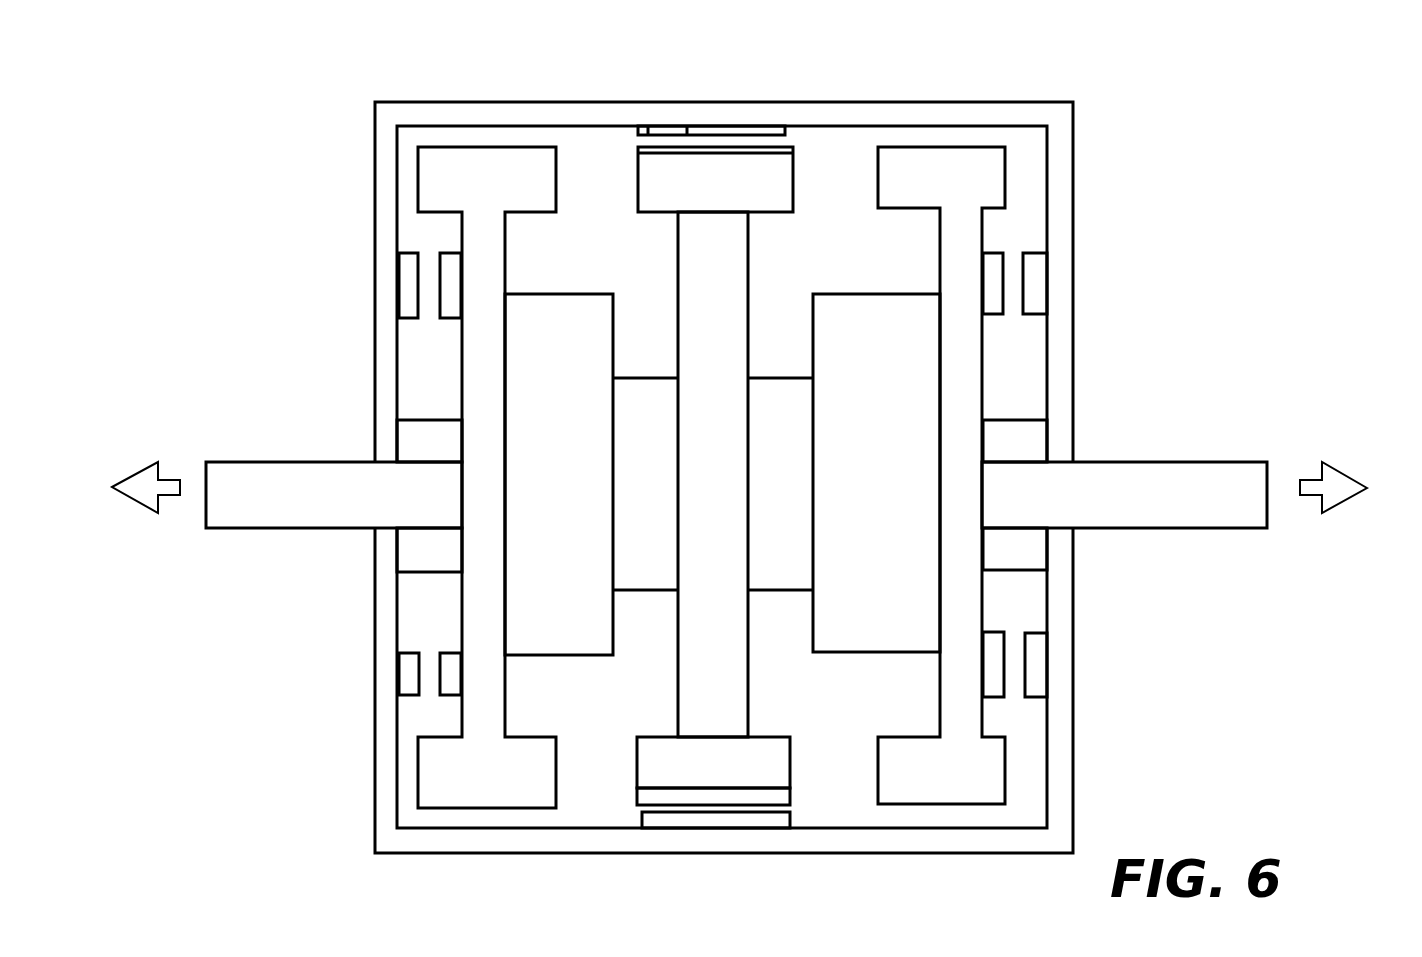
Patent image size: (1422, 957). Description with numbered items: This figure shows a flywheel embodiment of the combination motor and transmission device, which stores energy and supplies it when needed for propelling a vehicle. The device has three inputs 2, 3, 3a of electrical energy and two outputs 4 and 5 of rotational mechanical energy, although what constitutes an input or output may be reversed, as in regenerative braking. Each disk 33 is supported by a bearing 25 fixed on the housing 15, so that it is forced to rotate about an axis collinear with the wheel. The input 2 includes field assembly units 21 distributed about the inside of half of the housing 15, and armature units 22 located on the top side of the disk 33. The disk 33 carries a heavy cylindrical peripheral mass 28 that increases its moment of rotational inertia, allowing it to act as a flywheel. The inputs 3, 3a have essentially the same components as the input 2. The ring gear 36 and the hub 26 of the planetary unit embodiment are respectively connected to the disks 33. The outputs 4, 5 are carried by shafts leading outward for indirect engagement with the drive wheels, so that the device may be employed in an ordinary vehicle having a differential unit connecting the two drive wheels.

The input 2 is at (828, 92).
The input 3 is at (960, 92).
The input 3a is at (452, 92).
The output 4 is at (172, 537).
The output 5 is at (1360, 516).
The housing 15 is at (376, 155).
The field assembly units 21 is at (665, 132).
The armature units 22 is at (640, 150).
The bearing 25 is at (1005, 418).
The hub 26 is at (652, 592).
The cylindrical peripheral mass 28 is at (770, 183).
The disk 33 is at (738, 262).
The ring gear 36 is at (905, 653).